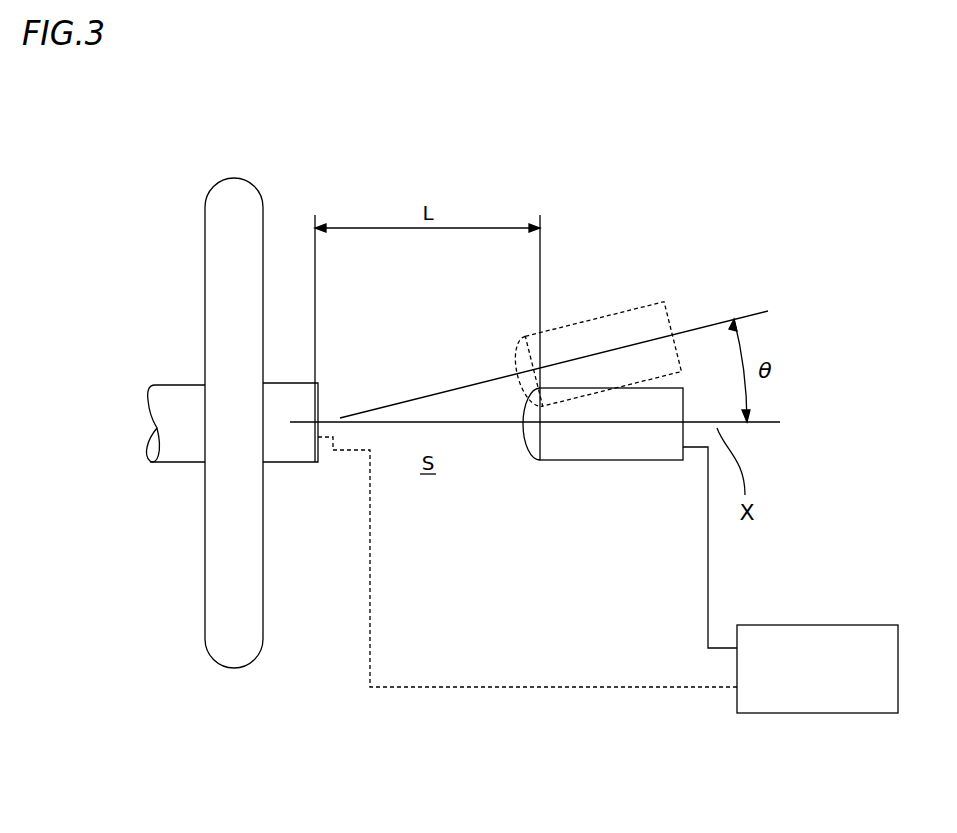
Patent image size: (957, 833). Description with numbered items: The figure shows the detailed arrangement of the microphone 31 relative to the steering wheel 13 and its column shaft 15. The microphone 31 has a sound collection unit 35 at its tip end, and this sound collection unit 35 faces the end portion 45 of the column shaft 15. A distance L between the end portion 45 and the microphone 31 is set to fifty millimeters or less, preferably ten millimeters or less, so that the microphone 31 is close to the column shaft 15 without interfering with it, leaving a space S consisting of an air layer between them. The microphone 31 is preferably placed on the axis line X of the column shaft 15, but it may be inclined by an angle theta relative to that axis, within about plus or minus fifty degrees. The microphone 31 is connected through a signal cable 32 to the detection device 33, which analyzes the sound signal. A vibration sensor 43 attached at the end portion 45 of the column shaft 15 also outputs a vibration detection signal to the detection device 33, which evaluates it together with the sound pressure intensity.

The steering wheel 13 is at (232, 670).
The column shaft 15 is at (285, 465).
The microphone 31 is at (573, 388).
The signal cable 32 is at (707, 592).
The detection device 33 is at (812, 623).
The sound collection unit 35 is at (513, 368).
The vibration sensor 43 is at (331, 464).
The end portion 45 is at (318, 402).